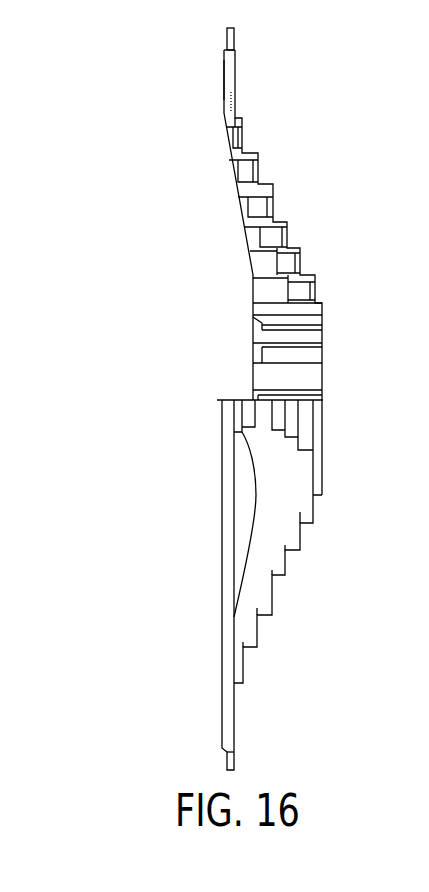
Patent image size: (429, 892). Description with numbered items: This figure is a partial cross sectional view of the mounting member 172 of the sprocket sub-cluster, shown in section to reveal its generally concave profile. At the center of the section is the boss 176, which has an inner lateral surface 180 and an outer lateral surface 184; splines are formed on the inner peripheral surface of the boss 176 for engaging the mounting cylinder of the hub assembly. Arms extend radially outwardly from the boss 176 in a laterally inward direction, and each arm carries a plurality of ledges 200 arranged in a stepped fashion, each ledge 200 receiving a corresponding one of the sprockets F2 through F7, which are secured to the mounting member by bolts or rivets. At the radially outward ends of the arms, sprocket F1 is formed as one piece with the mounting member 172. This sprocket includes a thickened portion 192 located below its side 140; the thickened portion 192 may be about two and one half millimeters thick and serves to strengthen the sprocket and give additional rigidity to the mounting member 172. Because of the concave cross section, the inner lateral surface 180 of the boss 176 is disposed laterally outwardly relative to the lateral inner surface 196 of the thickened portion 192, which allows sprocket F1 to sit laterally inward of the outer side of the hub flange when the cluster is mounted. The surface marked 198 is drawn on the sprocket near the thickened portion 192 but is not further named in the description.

The mounting member 172 is at (172, 96).
The side 140 is at (226, 33).
The rod right surface 198 is at (236, 63).
The lateral inner surface 196 is at (225, 72).
The thickened portion 192 is at (232, 92).
The outer lateral surface 184 is at (323, 343).
The inner lateral surface 180 is at (254, 341).
The boss 176 is at (323, 386).
The ledge 200 is at (293, 557).